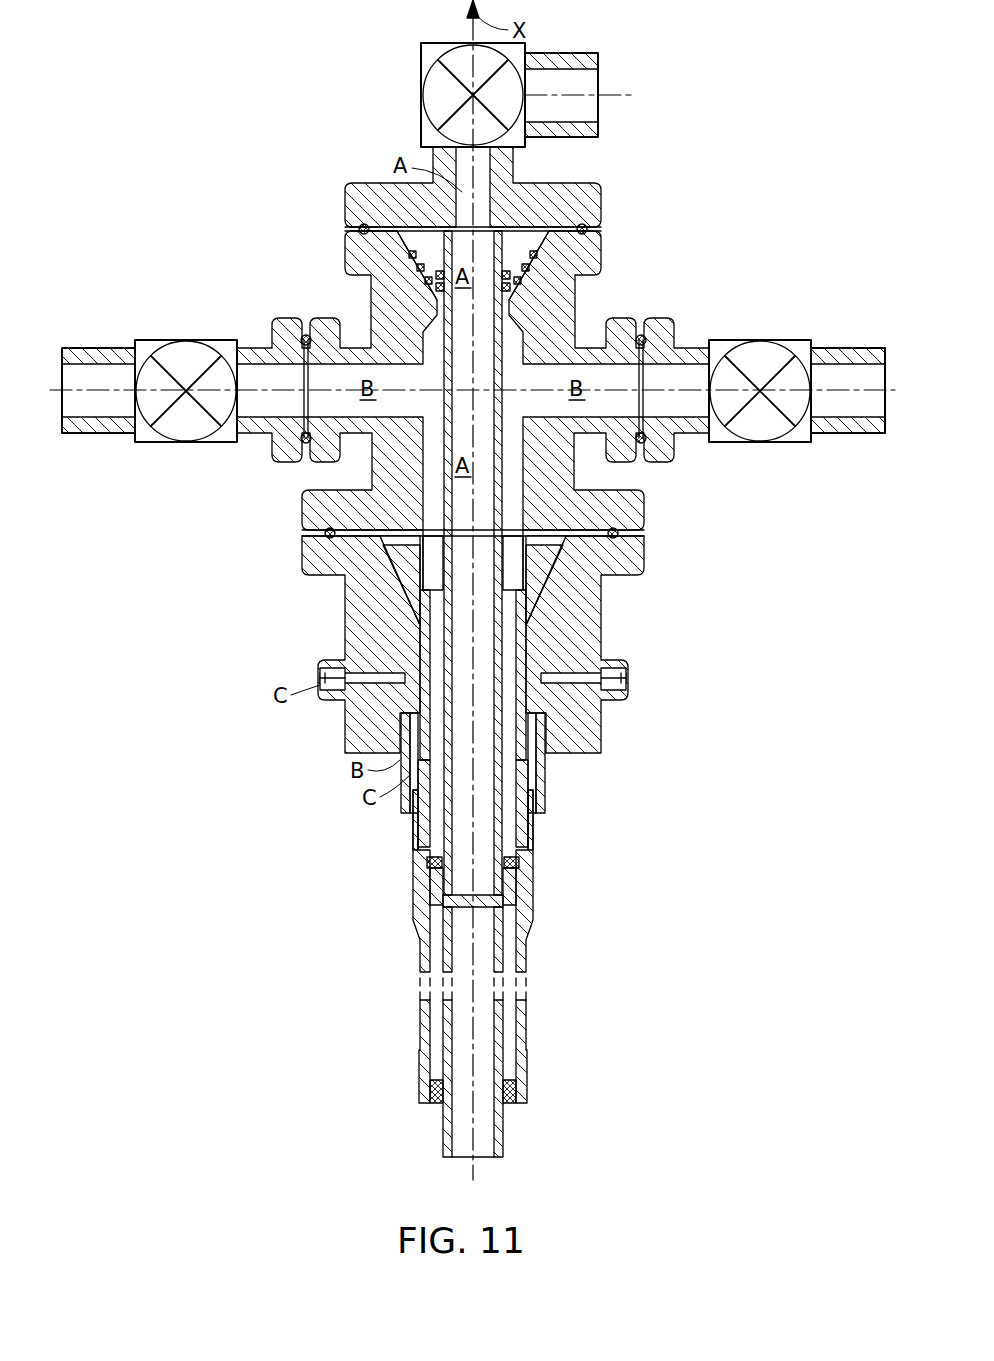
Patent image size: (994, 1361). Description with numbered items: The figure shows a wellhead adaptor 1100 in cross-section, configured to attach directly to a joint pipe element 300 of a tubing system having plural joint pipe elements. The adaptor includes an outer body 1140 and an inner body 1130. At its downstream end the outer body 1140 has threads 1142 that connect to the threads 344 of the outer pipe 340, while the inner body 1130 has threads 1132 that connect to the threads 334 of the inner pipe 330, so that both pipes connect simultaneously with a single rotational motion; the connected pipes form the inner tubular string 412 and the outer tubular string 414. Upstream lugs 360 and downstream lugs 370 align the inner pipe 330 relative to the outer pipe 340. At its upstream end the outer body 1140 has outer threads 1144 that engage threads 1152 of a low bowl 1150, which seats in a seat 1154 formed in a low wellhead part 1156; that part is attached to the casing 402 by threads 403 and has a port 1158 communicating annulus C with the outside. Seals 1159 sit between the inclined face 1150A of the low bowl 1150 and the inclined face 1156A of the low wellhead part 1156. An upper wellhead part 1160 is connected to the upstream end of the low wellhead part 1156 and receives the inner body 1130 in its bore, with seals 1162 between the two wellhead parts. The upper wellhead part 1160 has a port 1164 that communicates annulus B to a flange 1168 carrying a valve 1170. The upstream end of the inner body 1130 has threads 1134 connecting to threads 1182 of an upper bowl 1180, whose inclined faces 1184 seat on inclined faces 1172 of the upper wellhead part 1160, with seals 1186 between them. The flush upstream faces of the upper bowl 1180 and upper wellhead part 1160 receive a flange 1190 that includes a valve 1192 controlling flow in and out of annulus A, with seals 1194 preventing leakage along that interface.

The wellhead adaptor 1100 is at (752, 33).
The valve 1192 is at (440, 95).
The seals 1194 is at (362, 222).
The flange 1190 is at (577, 200).
The upper bowl 1180 is at (405, 240).
The seals 1186 is at (360, 272).
The threads 1134 is at (540, 250).
The inclined faces 1172 is at (530, 268).
The threads 1182 is at (517, 285).
The valve 1170 is at (157, 340).
The flange 1168 is at (272, 330).
The inclined faces 1184 is at (672, 335).
The port 1164 is at (245, 398).
The upper wellhead part 1160 is at (302, 440).
The seals 1162 is at (620, 512).
The inner body 1130 is at (430, 513).
The seat 1154 is at (405, 578).
The low bowl 1150 is at (625, 585).
The inclined face 1150A is at (410, 612).
The seals 1159 is at (560, 600).
The inclined face 1156A is at (415, 640).
The outer threads 1144 is at (540, 640).
The threads 1152 is at (380, 664).
The outer body 1140 is at (630, 680).
The port 1158 is at (630, 690).
The low wellhead part 1156 is at (355, 725).
The threads 403 is at (545, 720).
The casing 402 is at (550, 780).
The threads 344 is at (525, 810).
The threads 1142 is at (527, 840).
The upstream lugs 360 is at (425, 860).
The threads 1132 is at (435, 880).
The threads 334 is at (435, 900).
The outer tubular string 414 is at (412, 955).
The outer pipe 340 is at (525, 960).
The joint pipe element 300 is at (538, 1030).
The inner tubular string 412 is at (440, 1042).
The inner pipe 330 is at (500, 1040).
The downstream lugs 370 is at (435, 1107).